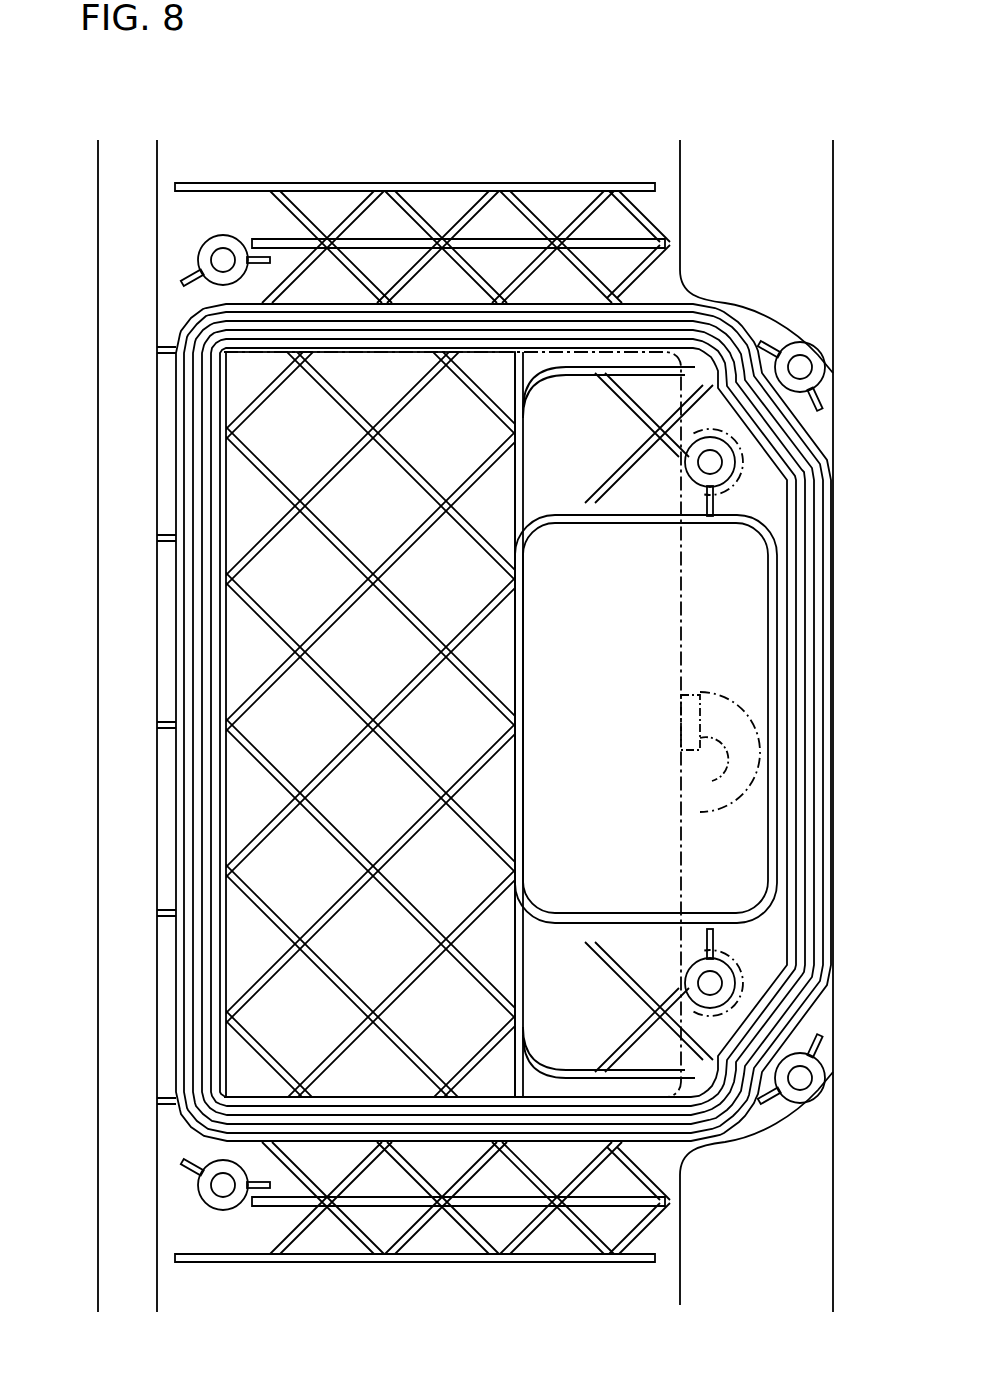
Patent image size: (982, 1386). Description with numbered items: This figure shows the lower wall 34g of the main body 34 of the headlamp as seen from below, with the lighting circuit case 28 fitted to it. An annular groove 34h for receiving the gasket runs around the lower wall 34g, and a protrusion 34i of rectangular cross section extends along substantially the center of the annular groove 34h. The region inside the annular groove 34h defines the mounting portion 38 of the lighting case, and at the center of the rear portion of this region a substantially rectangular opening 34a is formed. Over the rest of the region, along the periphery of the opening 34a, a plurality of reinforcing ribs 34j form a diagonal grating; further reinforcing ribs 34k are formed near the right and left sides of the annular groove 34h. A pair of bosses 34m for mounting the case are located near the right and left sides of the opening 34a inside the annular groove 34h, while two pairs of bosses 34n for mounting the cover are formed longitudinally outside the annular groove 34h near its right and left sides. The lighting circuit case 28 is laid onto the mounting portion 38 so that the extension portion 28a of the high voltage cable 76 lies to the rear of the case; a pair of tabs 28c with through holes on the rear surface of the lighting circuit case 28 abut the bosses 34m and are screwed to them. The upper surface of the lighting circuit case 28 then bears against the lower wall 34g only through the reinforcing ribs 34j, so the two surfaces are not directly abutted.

The main body 34 is at (92, 322).
The mounting portion of the lighting case 38 is at (568, 400).
The annular groove 34h is at (192, 612).
The protrusion 34i is at (202, 684).
The lower wall 34g is at (252, 800).
The reinforcing ribs 34j is at (518, 663).
The opening 34a is at (668, 743).
The lighting circuit case 28 is at (683, 620).
The high voltage cable 76 is at (743, 708).
The extension portion 28a is at (730, 765).
The tab 28c is at (740, 922).
The bosses for mounting the case 34m is at (700, 978).
The bosses for mounting the cover 34n is at (803, 1103).
The reinforcing ribs 34k is at (484, 1208).